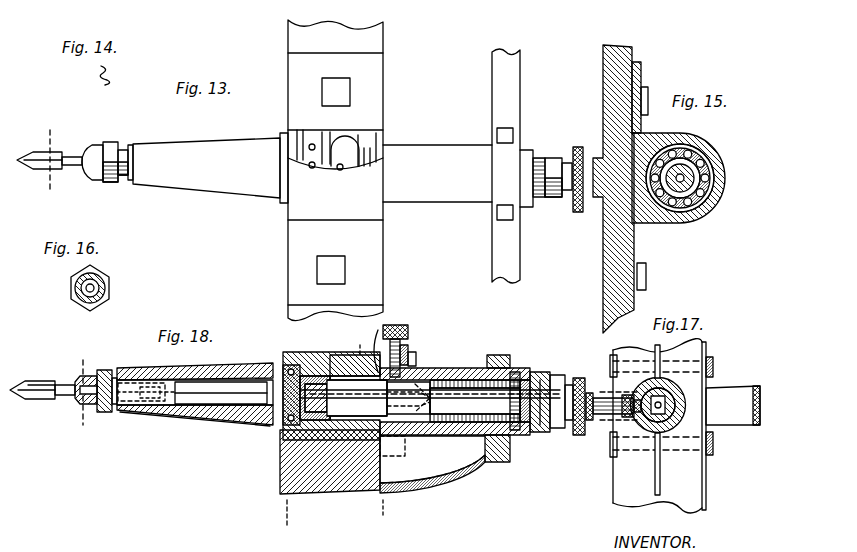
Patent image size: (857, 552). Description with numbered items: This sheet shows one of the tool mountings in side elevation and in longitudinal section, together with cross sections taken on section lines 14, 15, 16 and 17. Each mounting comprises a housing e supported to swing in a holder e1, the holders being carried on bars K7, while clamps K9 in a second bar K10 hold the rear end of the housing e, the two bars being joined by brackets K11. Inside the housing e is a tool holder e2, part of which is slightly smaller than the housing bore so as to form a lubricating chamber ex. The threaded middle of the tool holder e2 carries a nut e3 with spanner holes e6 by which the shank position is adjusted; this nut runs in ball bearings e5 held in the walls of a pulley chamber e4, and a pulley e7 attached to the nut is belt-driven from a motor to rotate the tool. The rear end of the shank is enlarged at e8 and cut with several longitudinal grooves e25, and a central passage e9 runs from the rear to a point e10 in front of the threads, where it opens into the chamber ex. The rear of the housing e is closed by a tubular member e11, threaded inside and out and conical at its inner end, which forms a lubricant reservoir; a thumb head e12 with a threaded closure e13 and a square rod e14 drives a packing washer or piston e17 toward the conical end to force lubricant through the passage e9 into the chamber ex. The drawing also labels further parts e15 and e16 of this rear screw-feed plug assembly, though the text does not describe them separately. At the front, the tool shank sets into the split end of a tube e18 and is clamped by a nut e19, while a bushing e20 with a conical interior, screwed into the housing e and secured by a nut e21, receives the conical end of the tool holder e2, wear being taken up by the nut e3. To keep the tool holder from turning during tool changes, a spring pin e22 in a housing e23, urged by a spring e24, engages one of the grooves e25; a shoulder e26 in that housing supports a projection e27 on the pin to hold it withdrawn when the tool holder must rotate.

In FIG. 13, the section line 14— 14 is at (50, 158).
In FIG. 18, the section line 15— 15 is at (330, 427).
In FIG. 18, the section line 16— 16 is at (83, 394).
In FIG. 18, the section line 17— 17 is at (373, 428).
In FIG. 13, the housing e is at (210, 168).
In FIG. 17, the housing e is at (664, 394).
In FIG. 18, the housing e is at (220, 368).
In FIG. 15, the holder e1 is at (700, 216).
In FIG. 18, the holder e1 is at (284, 440).
In FIG. 15, the tool holder e2 is at (700, 178).
In FIG. 18, the tool holder e2 is at (232, 392).
In FIG. 15, the nut e3 is at (690, 148).
In FIG. 18, the nut e3 is at (303, 365).
In FIG. 13, the pulley chamber e4 is at (335, 170).
In FIG. 18, the pulley chamber e4 is at (332, 352).
In FIG. 15, the ball bearings e5 is at (705, 158).
In FIG. 18, the ball bearings e5 is at (284, 428).
In FIG. 18, the spanner holes e6 is at (322, 366).
In FIG. 14, the pulley e7 is at (111, 74).
In FIG. 13, the pulley e7 is at (32, 166).
In FIG. 18, the pulley e7 is at (42, 398).
In FIG. 17, the enlarged rear end of shank e8 is at (665, 390).
In FIG. 18, the enlarged rear end of shank e8 is at (432, 424).
In FIG. 18, the central passage e9 is at (408, 490).
In FIG. 18, the forward end of passage e10 is at (268, 420).
In FIG. 13, the tubular member e11 is at (552, 157).
In FIG. 18, the tubular member e11 is at (408, 370).
In FIG. 13, the thumb head e12 is at (578, 146).
In FIG. 18, the thumb head e12 is at (579, 377).
In FIG. 18, the threaded closure e13 is at (557, 430).
In FIG. 18, the rod e14 is at (535, 432).
In FIG. 18, the nut e15 is at (538, 372).
In FIG. 18, the threaded sleeve e16 is at (470, 384).
In FIG. 18, the packing washer or piston e17 is at (516, 372).
In FIG. 13, the tube e18 is at (88, 178).
In FIG. 16, the tube e18 is at (79, 300).
In FIG. 18, the tube e18 is at (84, 404).
In FIG. 13, the nut e19 is at (111, 143).
In FIG. 16, the nut e19 is at (106, 292).
In FIG. 18, the nut e19 is at (106, 369).
In FIG. 18, the bushing e20 is at (168, 418).
In FIG. 18, the nut e21 is at (122, 410).
In FIG. 17, the spring pin e22 is at (614, 395).
In FIG. 18, the spring pin e22 is at (403, 352).
In FIG. 18, the housing e23 is at (416, 362).
In FIG. 17, the spring e24 is at (630, 418).
In FIG. 18, the spring e24 is at (397, 324).
In FIG. 17, the grooves e25 is at (680, 403).
In FIG. 18, the grooves e25 is at (399, 446).
In FIG. 17, the shoulder e26 is at (614, 416).
In FIG. 18, the shoulder e26 is at (410, 360).
In FIG. 17, the projection e27 is at (600, 396).
In FIG. 18, the lubricating chamber ex is at (200, 414).
In FIG. 15, the bars K7 is at (605, 189).
In FIG. 17, the clamps K9 is at (660, 472).
In FIG. 13, the second bar K10 is at (512, 250).
In FIG. 15, the second bar K10 is at (645, 252).
In FIG. 17, the second bar K10 is at (707, 350).
In FIG. 18, the second bar K10 is at (492, 464).
In FIG. 17, the brackets K11 is at (742, 386).
In FIG. 18, the brackets K11 is at (450, 474).